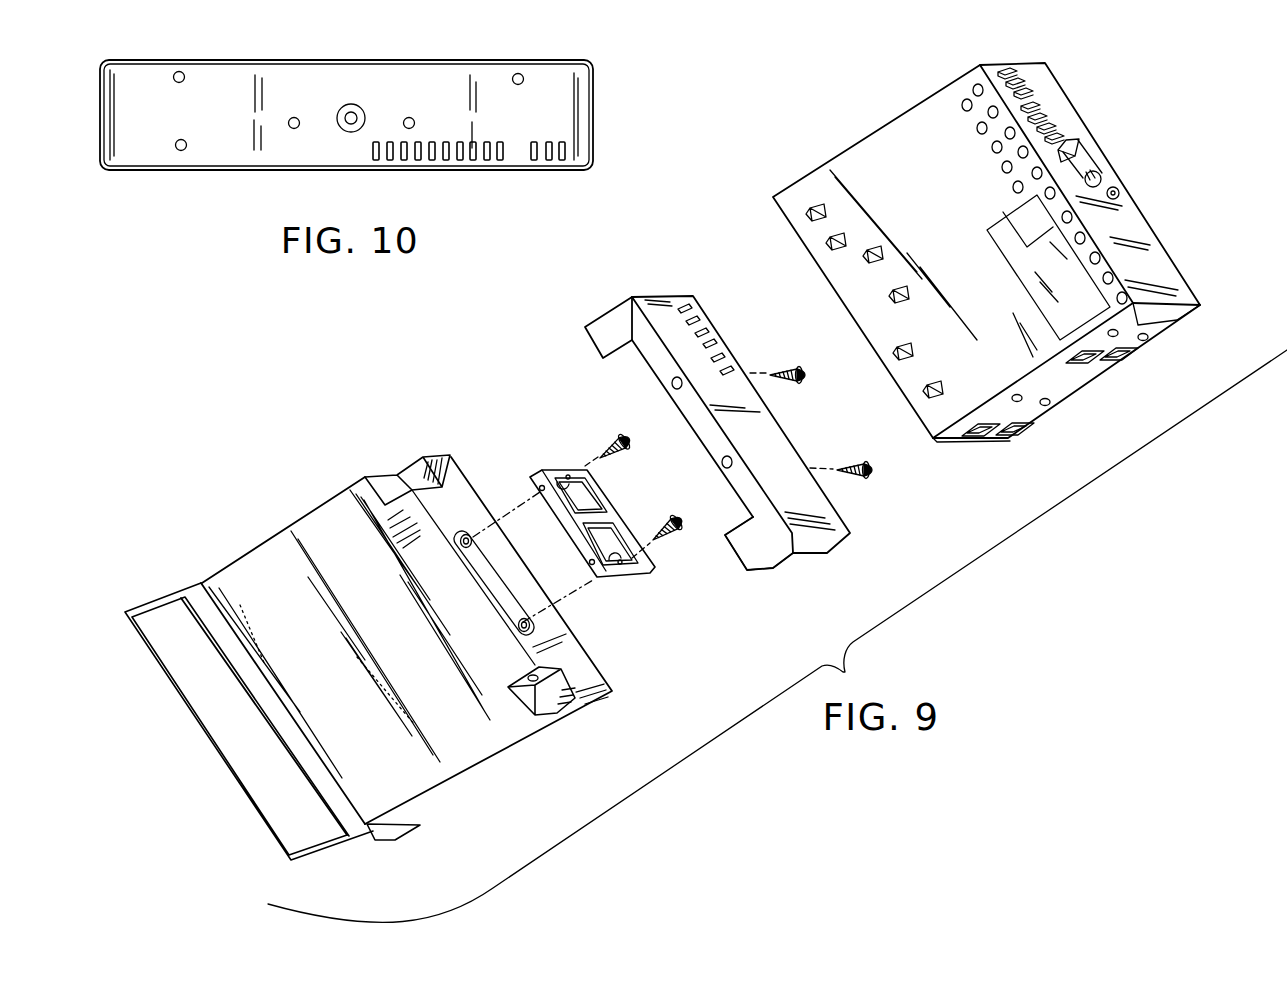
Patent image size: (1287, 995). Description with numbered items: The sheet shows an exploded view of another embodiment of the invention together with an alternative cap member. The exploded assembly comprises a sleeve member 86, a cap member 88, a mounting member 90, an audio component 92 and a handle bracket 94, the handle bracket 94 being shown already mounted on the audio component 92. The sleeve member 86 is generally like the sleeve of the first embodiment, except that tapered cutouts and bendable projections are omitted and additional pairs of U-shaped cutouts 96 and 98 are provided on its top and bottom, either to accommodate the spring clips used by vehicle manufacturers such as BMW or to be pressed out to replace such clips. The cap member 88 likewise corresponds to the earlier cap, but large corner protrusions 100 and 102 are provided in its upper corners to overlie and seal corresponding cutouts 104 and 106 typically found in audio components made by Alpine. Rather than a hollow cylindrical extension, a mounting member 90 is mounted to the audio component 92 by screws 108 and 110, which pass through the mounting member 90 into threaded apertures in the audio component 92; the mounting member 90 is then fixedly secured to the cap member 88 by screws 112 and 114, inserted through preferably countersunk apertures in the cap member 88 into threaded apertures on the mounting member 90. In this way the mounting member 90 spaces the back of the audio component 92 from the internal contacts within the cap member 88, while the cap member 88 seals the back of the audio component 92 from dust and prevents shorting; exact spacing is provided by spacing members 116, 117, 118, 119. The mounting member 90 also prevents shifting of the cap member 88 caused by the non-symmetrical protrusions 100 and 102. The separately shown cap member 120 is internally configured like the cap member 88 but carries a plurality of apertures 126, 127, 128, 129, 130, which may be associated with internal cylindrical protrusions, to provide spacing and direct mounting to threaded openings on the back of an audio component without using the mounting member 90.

In FIG. 9, the sleeve member 86 is at (1078, 384).
In FIG. 9, the cap member 88 is at (848, 538).
In FIG. 9, the mounting member 90 is at (642, 574).
In FIG. 9, the audio component 92 is at (511, 762).
In FIG. 9, the handle bracket 94 is at (393, 836).
In FIG. 9, the U-shaped cutouts 96 is at (862, 253).
In FIG. 9, the U-shaped cutouts 98 is at (926, 393).
In FIG. 9, the corner protrusion 100 is at (604, 312).
In FIG. 9, the corner protrusion 102 is at (772, 572).
In FIG. 9, the cutout 104 is at (368, 474).
In FIG. 9, the cutout 106 is at (544, 711).
In FIG. 9, the screw 108 is at (606, 446).
In FIG. 9, the screw 110 is at (679, 536).
In FIG. 9, the screw 112 is at (785, 368).
In FIG. 9, the screw 114 is at (860, 478).
In FIG. 9, the spacing member 116 is at (603, 490).
In FIG. 9, the spacing member 117 is at (552, 470).
In FIG. 9, the spacing member 118 is at (562, 527).
In FIG. 9, the spacing member 119 is at (614, 573).
In FIG. 10, the cap member 120 is at (480, 167).
In FIG. 10, the aperture 126 is at (184, 74).
In FIG. 10, the aperture 127 is at (181, 150).
In FIG. 10, the aperture 128 is at (294, 117).
In FIG. 10, the aperture 129 is at (520, 73).
In FIG. 10, the aperture 130 is at (409, 117).